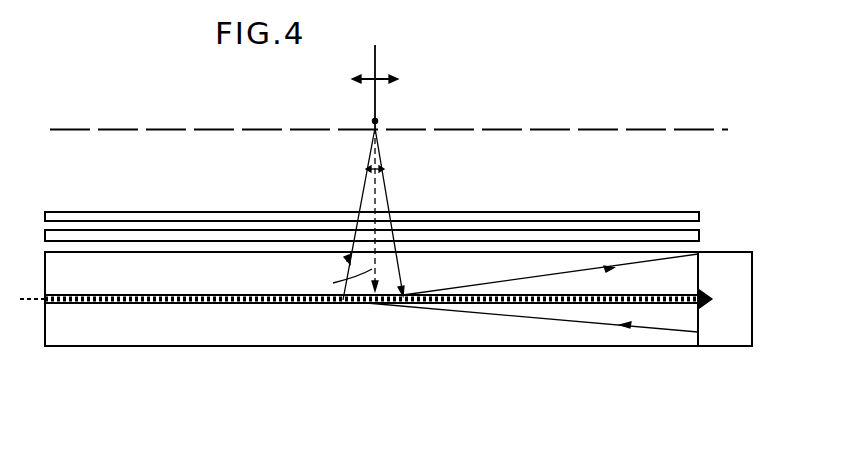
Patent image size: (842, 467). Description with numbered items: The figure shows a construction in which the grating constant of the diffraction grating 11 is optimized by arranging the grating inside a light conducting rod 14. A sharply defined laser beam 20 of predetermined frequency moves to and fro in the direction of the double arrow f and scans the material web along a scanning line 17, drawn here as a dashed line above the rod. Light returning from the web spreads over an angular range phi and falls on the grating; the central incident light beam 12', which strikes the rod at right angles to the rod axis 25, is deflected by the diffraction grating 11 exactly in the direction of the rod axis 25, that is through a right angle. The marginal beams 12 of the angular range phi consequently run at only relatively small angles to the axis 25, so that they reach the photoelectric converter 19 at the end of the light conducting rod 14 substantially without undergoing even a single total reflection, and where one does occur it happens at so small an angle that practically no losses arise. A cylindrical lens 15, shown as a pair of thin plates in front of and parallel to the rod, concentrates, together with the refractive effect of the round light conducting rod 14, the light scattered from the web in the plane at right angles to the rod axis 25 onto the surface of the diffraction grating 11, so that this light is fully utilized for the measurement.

The diffraction grating 11 is at (202, 303).
The marginal beams 12 is at (385, 214).
The central incident light beam 12' is at (339, 273).
The light conducting rod 14 is at (340, 338).
The cylindrical lens 15 is at (707, 226).
The scanning line 17 is at (550, 129).
The photoelectric converter 19 is at (720, 340).
The laser beam 20 is at (378, 100).
The rod axis 25 is at (24, 300).
The double arrow f is at (380, 78).
The angular range phi is at (379, 162).